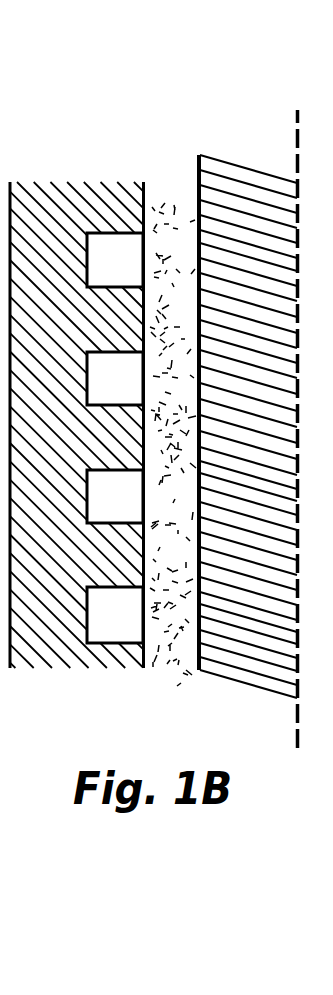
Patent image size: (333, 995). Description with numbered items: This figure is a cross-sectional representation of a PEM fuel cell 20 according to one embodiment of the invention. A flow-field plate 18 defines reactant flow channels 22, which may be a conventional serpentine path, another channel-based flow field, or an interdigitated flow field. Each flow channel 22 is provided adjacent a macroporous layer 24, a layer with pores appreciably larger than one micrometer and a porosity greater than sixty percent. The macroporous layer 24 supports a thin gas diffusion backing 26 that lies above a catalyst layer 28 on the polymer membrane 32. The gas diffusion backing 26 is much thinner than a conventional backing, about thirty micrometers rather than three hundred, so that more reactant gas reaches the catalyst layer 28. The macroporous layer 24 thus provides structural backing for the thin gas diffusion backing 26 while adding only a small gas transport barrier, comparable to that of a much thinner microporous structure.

The flow field plate 18 is at (72, 345).
The fuel cell 20 is at (136, 114).
The reactant flow channels 22 is at (105, 248).
The macroporous layer 24 is at (174, 238).
The gas diffusion backing 26 is at (193, 194).
The catalyst layer 28 is at (213, 165).
The polymer membrane 32 is at (244, 178).